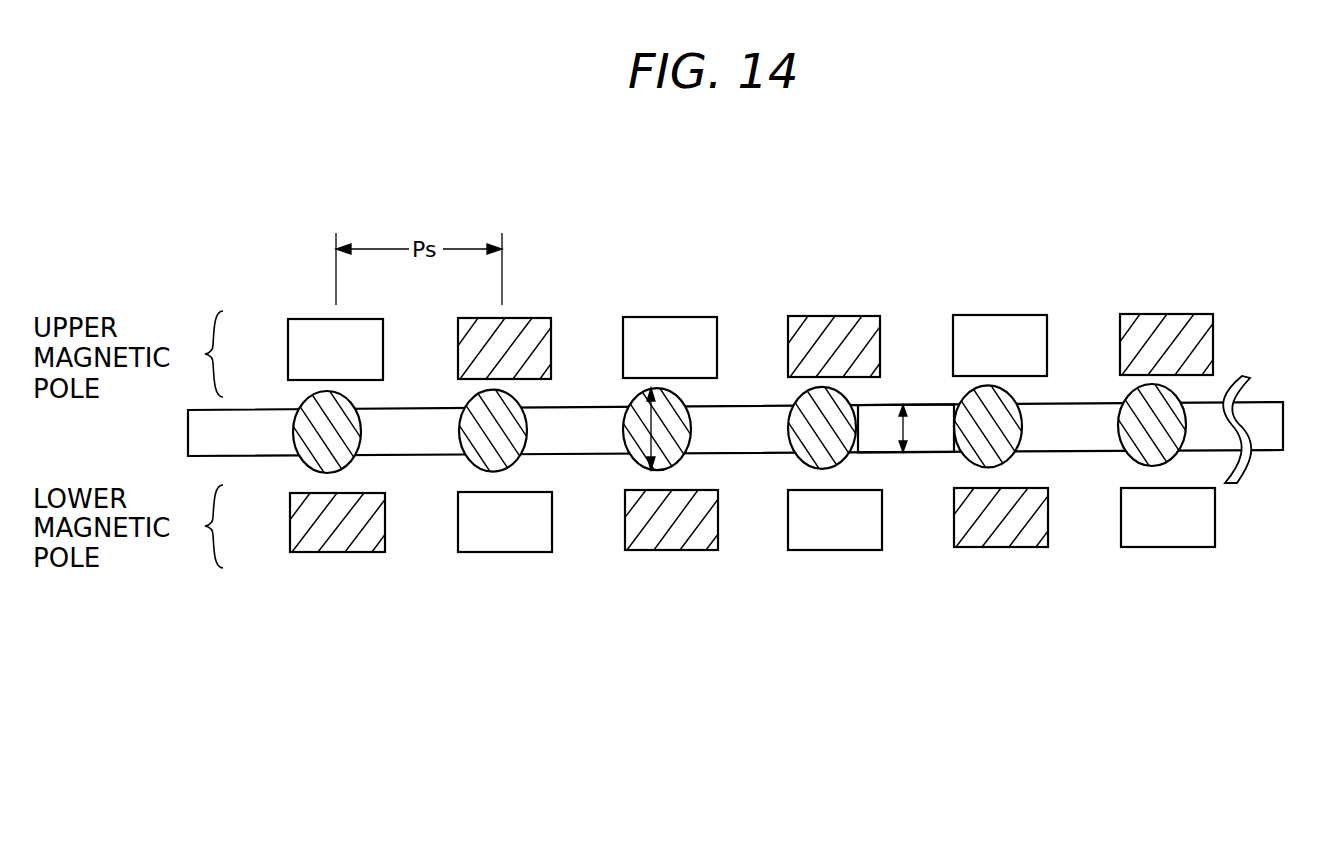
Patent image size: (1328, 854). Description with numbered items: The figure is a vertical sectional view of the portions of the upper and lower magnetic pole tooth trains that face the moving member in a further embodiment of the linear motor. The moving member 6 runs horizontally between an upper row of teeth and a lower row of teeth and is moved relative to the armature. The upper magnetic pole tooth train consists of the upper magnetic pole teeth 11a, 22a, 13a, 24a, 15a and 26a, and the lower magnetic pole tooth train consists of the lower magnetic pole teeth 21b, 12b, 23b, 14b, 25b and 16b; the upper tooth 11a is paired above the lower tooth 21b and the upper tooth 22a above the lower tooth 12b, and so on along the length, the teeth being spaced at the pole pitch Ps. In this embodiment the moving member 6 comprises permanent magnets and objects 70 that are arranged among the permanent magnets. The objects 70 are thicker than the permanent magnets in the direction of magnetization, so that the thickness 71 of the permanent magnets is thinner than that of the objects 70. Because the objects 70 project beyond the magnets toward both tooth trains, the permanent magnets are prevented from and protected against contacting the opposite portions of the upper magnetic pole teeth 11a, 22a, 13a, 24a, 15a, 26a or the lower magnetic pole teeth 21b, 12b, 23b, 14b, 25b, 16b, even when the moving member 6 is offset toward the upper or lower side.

The moving member 6 is at (1270, 402).
The object 70 is at (682, 398).
The thickness of the permanent magnets 71 is at (908, 404).
The upper magnetic pole tooth 11a is at (306, 319).
The upper magnetic pole tooth 22a is at (538, 318).
The upper magnetic pole tooth 13a is at (672, 317).
The upper magnetic pole tooth 24a is at (833, 316).
The upper magnetic pole tooth 15a is at (1000, 315).
The upper magnetic pole tooth 26a is at (1160, 314).
The lower magnetic pole tooth 21b is at (337, 552).
The lower magnetic pole tooth 12b is at (505, 552).
The lower magnetic pole tooth 23b is at (677, 550).
The lower magnetic pole tooth 14b is at (835, 550).
The lower magnetic pole tooth 25b is at (1010, 548).
The lower magnetic pole tooth 16b is at (1172, 548).